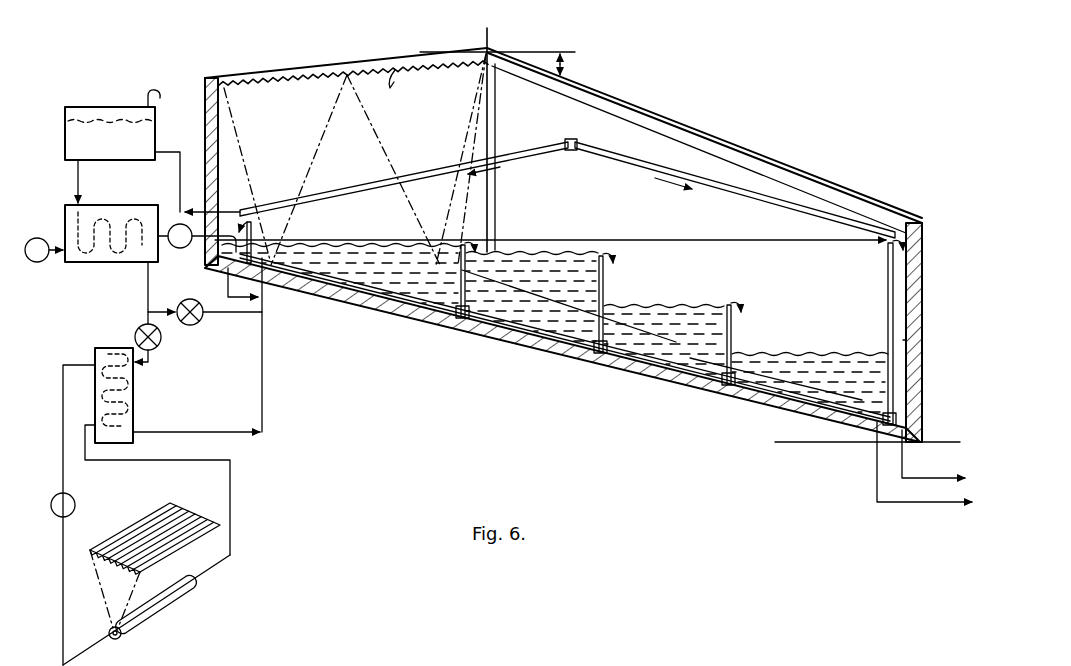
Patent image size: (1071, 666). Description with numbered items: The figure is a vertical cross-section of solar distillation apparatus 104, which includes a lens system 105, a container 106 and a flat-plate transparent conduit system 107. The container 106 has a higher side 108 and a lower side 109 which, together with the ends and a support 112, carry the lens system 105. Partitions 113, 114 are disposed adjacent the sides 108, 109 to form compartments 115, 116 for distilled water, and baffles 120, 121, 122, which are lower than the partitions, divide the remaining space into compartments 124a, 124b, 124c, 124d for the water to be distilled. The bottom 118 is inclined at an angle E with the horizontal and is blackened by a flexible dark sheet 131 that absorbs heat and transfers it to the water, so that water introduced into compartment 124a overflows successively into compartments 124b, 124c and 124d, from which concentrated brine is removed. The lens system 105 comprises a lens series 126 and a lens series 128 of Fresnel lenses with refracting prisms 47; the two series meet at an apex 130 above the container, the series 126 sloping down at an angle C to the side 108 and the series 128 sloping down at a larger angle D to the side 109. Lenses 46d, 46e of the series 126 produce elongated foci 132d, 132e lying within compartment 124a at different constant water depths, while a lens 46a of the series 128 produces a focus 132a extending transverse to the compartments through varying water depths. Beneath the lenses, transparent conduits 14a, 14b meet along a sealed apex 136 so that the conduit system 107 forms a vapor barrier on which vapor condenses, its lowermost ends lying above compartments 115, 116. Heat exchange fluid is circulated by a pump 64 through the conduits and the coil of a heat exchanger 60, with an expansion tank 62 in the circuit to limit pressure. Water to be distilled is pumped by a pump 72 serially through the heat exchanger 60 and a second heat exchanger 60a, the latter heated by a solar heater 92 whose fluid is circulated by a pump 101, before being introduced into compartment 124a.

The solar distillation apparatus 104 is at (686, 54).
The Fresnel lens 46d is at (288, 72).
The Fresnel lens 46e is at (367, 62).
The lens series 126 is at (394, 57).
The angle C is at (433, 50).
The angle D is at (570, 65).
The apex 130 is at (490, 127).
The lens system 105 is at (507, 48).
The Fresnel lens 46a is at (703, 132).
The lens series 128 is at (800, 174).
The container 106 is at (930, 287).
The compartment 116 is at (907, 337).
The side 109 is at (918, 343).
The support 112 is at (497, 127).
The refracting prism 47 is at (404, 89).
The side 108 is at (232, 132).
The transparent conduit 14a is at (347, 186).
The apex 136 is at (574, 140).
The transparent conduit 14b is at (703, 196).
The transparent conduit system 107 is at (578, 168).
The compartment 124a is at (361, 235).
The compartment 124b is at (553, 245).
The compartment 124c is at (677, 299).
The compartment 124d is at (812, 351).
The partition 113 is at (262, 226).
The compartment 115 is at (228, 230).
The bottom 118 is at (471, 332).
The baffle 120 is at (458, 314).
The baffle 121 is at (602, 291).
The baffle 122 is at (740, 334).
The partition 114 is at (886, 268).
The flexible dark sheet 131 is at (906, 375).
The elongated focus 132a is at (547, 311).
The elongated focus 132e is at (433, 269).
The elongated focus 132d is at (290, 269).
The angle E is at (802, 421).
The expansion tank 62 is at (158, 129).
The pump 64 is at (175, 224).
The heat exchanger 60 is at (106, 264).
The pump 72 is at (42, 264).
The heat exchanger 60a is at (134, 404).
The pump 101 is at (76, 505).
The solar heater 92 is at (171, 502).